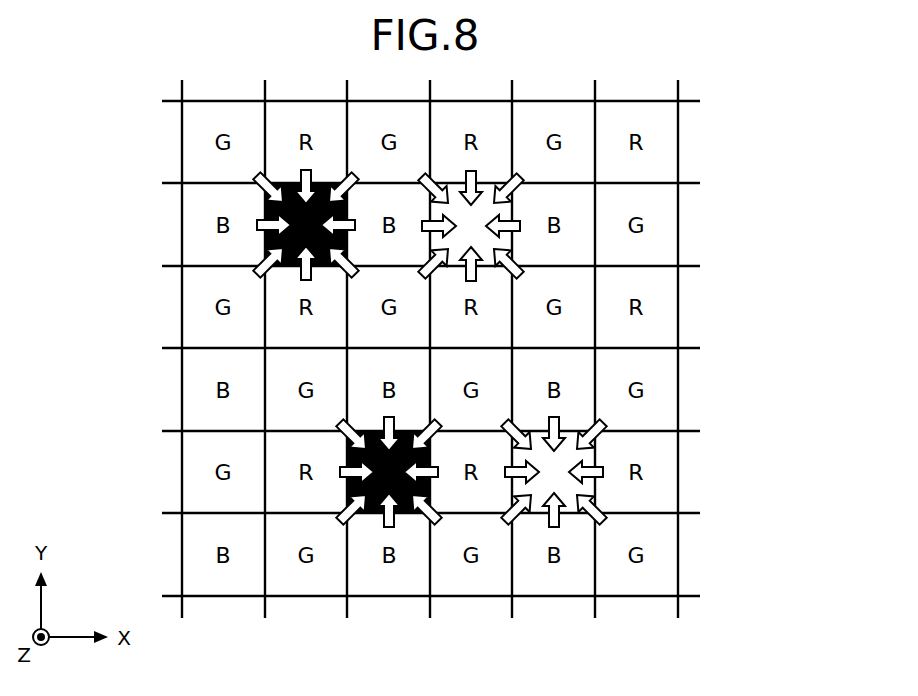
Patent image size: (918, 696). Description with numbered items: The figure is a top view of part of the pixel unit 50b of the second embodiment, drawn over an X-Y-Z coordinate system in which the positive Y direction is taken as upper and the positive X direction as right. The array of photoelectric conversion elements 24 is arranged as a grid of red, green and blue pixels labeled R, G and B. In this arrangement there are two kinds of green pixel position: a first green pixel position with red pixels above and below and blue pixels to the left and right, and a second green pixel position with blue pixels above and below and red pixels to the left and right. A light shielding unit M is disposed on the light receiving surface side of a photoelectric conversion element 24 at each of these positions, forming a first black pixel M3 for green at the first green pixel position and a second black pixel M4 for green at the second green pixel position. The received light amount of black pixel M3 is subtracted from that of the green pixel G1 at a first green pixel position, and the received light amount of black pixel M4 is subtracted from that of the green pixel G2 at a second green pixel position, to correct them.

The photoelectric conversion element 24 is at (647, 112).
The pixel unit 50b is at (483, 331).
The light shielding unit M is at (268, 240).
The first black pixel for green M3 is at (258, 196).
The second black pixel for green M4 is at (340, 448).
The green pixel G1 is at (507, 246).
The green pixel G2 is at (585, 490).